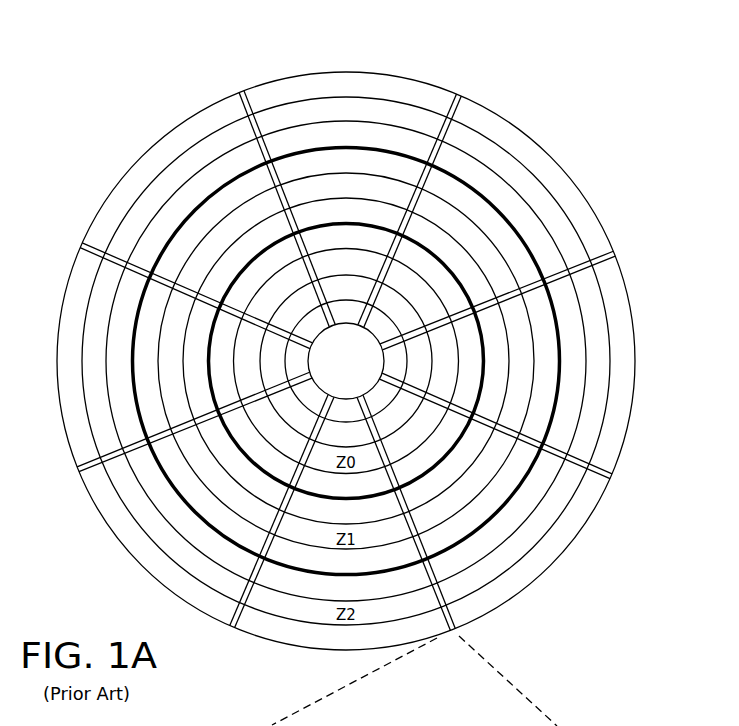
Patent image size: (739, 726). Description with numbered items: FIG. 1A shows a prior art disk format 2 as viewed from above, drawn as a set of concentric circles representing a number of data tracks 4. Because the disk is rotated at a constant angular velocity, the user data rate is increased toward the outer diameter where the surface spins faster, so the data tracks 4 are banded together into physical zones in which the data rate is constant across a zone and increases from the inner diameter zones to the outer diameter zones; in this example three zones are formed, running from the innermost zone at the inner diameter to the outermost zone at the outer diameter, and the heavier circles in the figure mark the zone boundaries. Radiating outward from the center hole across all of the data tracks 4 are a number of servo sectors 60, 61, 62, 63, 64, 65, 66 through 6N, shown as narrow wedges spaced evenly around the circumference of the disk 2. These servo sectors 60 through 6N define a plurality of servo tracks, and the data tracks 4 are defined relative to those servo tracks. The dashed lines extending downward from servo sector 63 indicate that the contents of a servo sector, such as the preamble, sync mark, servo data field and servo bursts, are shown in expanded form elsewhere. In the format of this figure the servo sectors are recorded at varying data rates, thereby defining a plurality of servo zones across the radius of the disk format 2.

The disk format 2 is at (548, 134).
The data tracks 4 is at (343, 110).
The servo sector 60 is at (461, 93).
The servo sector 61 is at (618, 252).
The servo sector 62 is at (615, 476).
The servo sector 63 is at (216, 724).
The servo sector 64 is at (231, 627).
The servo sector 65 is at (76, 471).
The servo sector 66 is at (80, 245).
The servo sector 6N is at (244, 92).